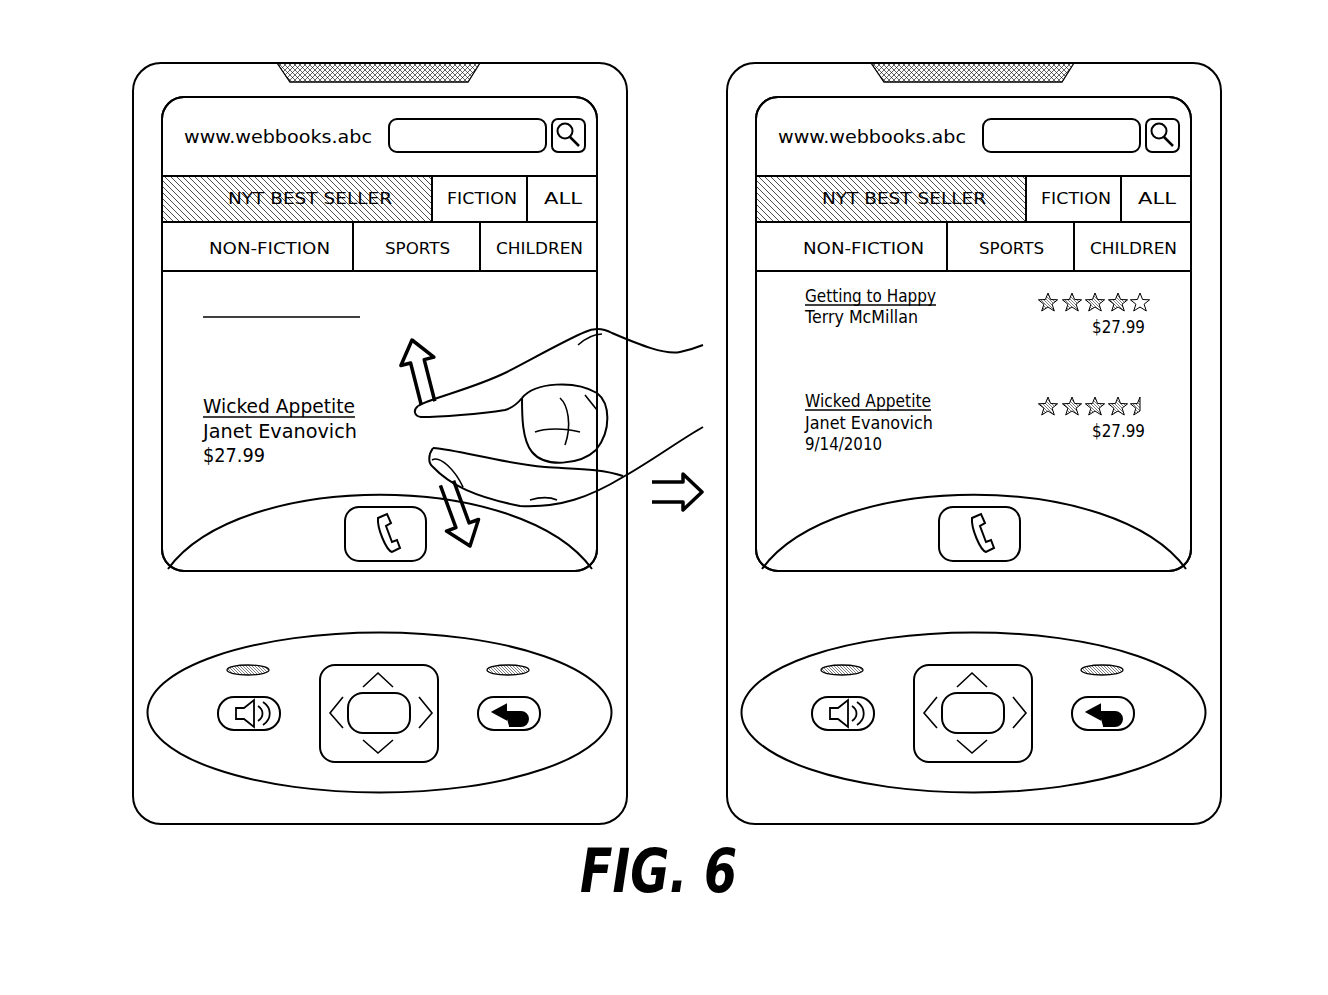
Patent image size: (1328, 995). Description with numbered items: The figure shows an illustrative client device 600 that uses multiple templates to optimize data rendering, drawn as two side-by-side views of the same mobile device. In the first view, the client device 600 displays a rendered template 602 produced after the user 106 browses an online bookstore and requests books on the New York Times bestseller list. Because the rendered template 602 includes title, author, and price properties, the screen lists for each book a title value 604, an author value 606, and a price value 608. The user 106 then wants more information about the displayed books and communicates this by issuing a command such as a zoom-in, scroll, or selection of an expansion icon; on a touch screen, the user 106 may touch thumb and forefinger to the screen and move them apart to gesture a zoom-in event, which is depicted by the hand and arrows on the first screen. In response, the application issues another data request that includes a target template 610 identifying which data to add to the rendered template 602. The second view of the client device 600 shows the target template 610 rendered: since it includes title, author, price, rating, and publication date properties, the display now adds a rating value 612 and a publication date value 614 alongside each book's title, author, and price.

The illustrative client device 600 is at (1240, 82).
The rendered template 602 is at (162, 150).
The title value 604 is at (195, 302).
The author value 606 is at (196, 330).
The price value 608 is at (196, 356).
The target template 610 is at (755, 144).
The rating value 612 is at (1155, 303).
The publication date value 614 is at (797, 337).
The user 106 is at (687, 417).